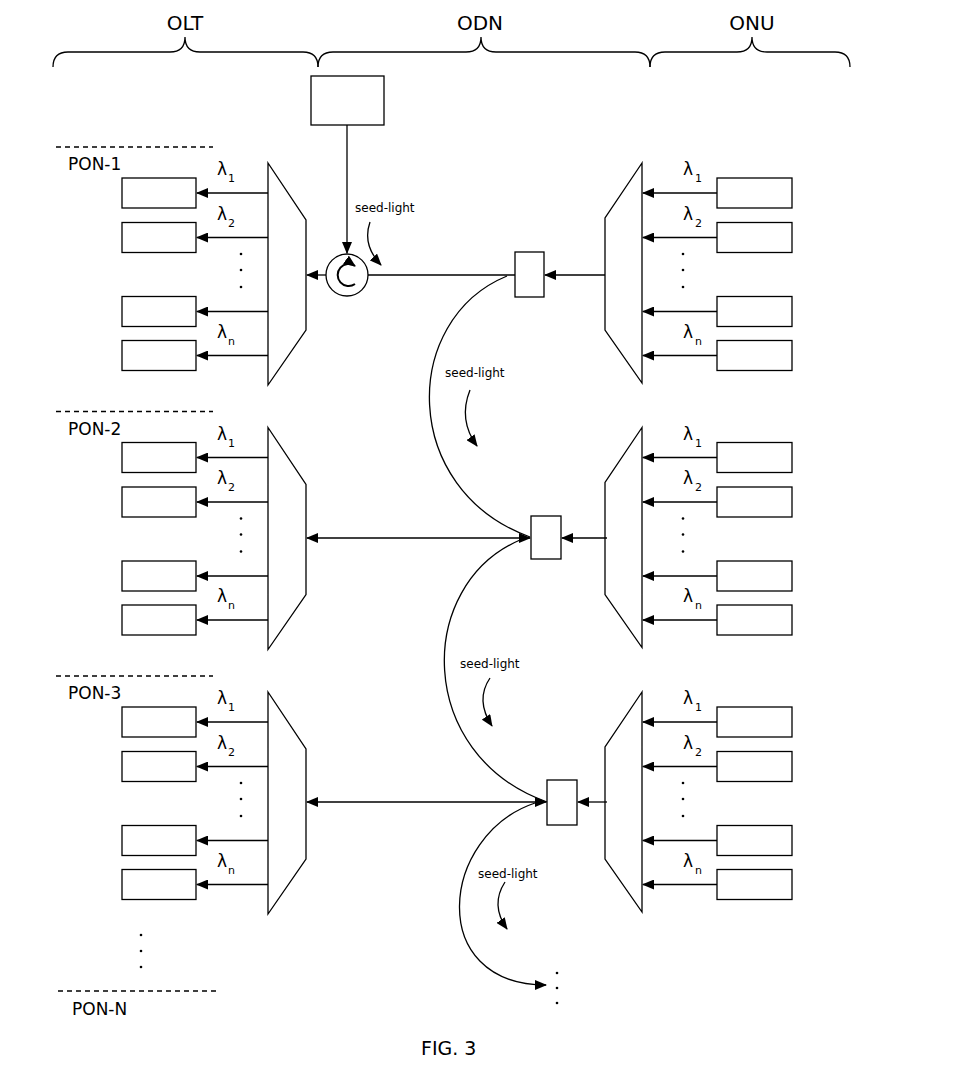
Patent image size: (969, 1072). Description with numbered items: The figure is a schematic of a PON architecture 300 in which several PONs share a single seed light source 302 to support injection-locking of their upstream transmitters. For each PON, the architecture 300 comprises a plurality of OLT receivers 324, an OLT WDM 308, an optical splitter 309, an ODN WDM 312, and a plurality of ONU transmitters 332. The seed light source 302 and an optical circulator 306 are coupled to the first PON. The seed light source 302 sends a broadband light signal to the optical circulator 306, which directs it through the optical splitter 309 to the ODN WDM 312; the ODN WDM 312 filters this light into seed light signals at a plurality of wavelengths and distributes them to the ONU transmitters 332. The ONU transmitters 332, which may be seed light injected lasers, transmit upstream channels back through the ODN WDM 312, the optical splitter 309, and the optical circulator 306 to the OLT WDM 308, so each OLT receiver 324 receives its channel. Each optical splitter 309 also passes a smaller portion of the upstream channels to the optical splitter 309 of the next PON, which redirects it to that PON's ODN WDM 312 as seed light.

The PON architecture 300 is at (664, 978).
The seed light source 302 is at (384, 105).
The optical circulator 306 is at (352, 297).
The OLT WDM 308 is at (293, 200).
The optical splitter 309 is at (530, 252).
The ODN WDM 312 is at (626, 186).
The OLT receiver 324 is at (113, 193).
The ONU transmitter 332 is at (792, 193).